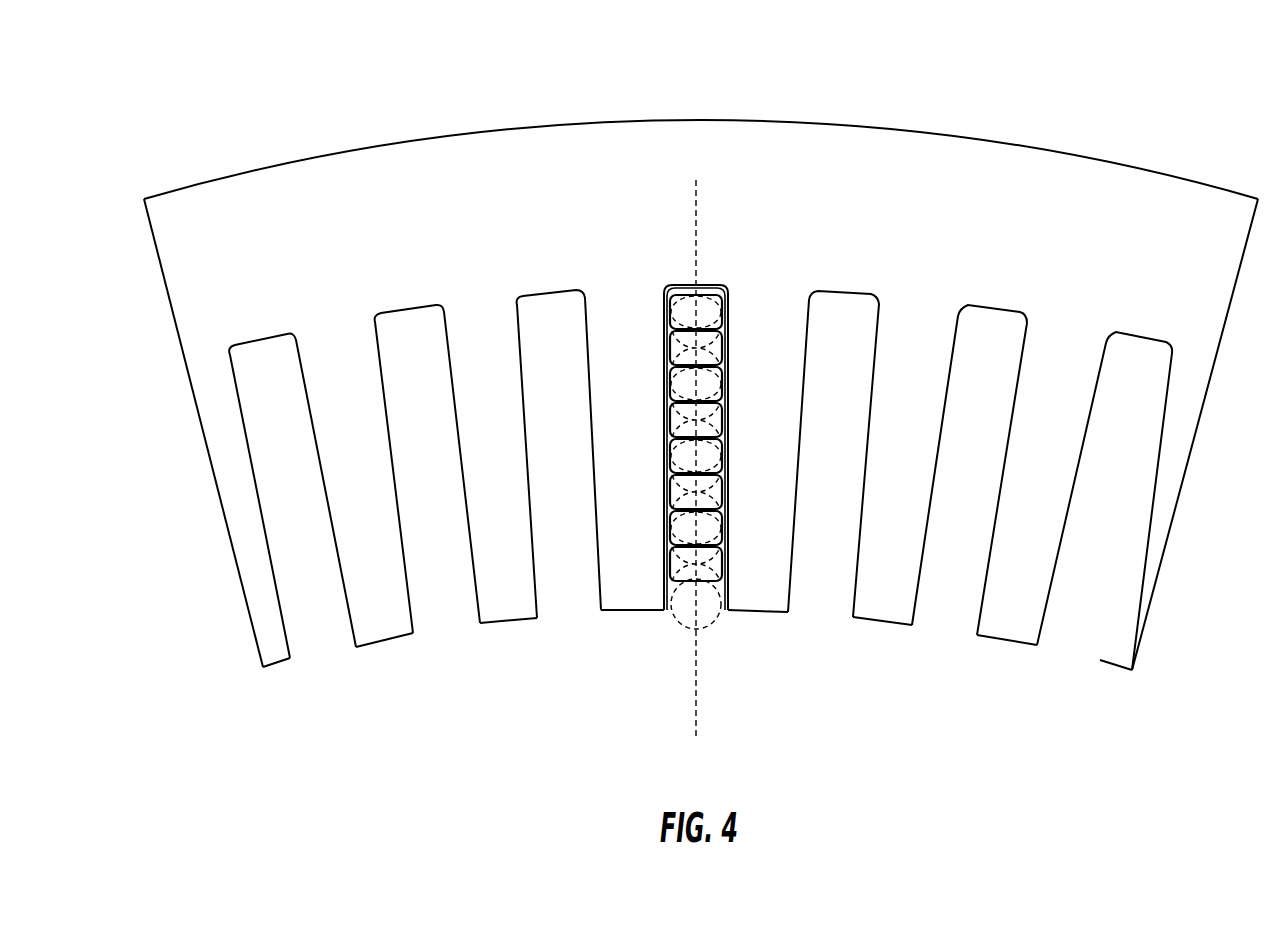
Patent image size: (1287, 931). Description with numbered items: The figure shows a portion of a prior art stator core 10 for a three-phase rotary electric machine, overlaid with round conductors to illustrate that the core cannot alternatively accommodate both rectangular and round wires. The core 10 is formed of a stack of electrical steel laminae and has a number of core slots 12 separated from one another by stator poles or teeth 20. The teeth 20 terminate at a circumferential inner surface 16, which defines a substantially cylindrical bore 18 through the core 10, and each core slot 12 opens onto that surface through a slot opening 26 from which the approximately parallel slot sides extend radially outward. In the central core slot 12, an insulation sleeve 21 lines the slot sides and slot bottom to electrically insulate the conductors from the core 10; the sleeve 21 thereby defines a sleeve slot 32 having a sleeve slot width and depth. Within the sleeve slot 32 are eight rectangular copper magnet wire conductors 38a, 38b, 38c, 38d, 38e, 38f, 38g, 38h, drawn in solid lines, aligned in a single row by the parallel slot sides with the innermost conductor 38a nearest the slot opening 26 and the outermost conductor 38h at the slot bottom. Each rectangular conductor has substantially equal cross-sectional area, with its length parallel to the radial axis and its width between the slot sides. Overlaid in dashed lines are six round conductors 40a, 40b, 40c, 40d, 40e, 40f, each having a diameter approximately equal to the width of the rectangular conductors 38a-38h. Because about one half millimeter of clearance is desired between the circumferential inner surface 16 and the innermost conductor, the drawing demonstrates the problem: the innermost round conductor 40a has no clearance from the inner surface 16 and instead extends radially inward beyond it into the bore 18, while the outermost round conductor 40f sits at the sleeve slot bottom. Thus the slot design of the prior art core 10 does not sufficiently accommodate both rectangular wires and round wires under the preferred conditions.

The stator core 10 is at (1134, 133).
The core slot 12 is at (553, 313).
The circumferential inner surface 16 is at (633, 611).
The cylindrical bore 18 is at (913, 757).
The teeth 20 is at (377, 612).
The insulation sleeve 21 is at (667, 629).
The slot opening 26 is at (561, 621).
The sleeve slot 32 is at (727, 633).
The rectangular conductor 38a is at (668, 561).
The rectangular conductor 38b is at (668, 517).
The rectangular conductor 38c is at (668, 511).
The rectangular conductor 38d is at (668, 461).
The rectangular conductor 38e is at (668, 418).
The rectangular conductor 38f is at (668, 388).
The rectangular conductor 38g is at (670, 345).
The rectangular conductor 38h is at (670, 302).
The round conductor 40a is at (697, 624).
The round conductor 40b is at (722, 518).
The round conductor 40c is at (727, 459).
The round conductor 40d is at (730, 398).
The round conductor 40e is at (726, 349).
The round conductor 40f is at (728, 299).